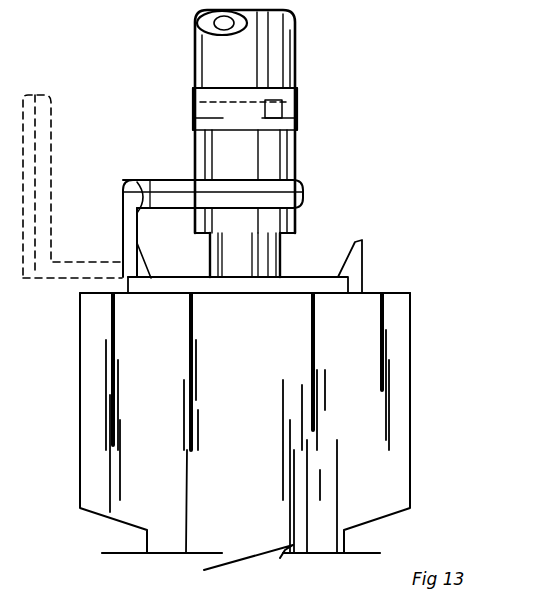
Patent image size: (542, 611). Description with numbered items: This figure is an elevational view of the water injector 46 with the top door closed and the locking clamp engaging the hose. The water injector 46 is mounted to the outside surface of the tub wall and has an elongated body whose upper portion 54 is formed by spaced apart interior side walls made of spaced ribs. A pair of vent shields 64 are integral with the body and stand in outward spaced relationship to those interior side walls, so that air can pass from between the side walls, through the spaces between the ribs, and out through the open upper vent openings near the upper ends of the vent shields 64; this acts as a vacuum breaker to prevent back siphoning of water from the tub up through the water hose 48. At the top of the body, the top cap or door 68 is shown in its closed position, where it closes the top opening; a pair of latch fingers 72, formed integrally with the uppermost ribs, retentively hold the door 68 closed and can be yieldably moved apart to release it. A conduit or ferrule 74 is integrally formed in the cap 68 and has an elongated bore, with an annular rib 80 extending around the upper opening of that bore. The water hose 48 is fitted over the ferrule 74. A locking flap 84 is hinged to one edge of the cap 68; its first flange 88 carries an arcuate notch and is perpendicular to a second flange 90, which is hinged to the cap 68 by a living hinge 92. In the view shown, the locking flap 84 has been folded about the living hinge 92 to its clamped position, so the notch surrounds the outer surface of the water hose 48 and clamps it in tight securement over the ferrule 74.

The water injector 46 is at (422, 308).
The water hose 48 is at (275, 55).
The upper portion 54 is at (393, 337).
The vent shields 64 is at (80, 342).
The top cap or door 68 is at (309, 278).
The latch fingers 72 is at (361, 243).
The conduit or ferrule 74 is at (298, 143).
The annular rib 80 is at (235, 124).
The locking flap 84 is at (302, 179).
The first flange 88 is at (153, 182).
The second flange 90 is at (144, 200).
The living hinge 92 is at (128, 276).